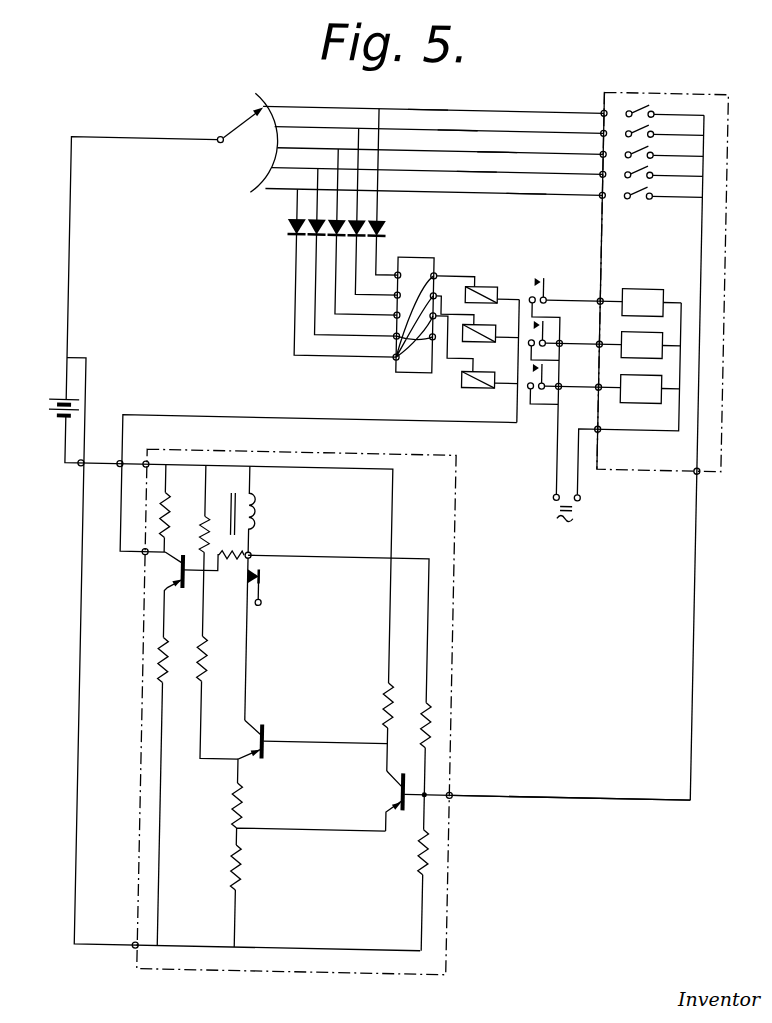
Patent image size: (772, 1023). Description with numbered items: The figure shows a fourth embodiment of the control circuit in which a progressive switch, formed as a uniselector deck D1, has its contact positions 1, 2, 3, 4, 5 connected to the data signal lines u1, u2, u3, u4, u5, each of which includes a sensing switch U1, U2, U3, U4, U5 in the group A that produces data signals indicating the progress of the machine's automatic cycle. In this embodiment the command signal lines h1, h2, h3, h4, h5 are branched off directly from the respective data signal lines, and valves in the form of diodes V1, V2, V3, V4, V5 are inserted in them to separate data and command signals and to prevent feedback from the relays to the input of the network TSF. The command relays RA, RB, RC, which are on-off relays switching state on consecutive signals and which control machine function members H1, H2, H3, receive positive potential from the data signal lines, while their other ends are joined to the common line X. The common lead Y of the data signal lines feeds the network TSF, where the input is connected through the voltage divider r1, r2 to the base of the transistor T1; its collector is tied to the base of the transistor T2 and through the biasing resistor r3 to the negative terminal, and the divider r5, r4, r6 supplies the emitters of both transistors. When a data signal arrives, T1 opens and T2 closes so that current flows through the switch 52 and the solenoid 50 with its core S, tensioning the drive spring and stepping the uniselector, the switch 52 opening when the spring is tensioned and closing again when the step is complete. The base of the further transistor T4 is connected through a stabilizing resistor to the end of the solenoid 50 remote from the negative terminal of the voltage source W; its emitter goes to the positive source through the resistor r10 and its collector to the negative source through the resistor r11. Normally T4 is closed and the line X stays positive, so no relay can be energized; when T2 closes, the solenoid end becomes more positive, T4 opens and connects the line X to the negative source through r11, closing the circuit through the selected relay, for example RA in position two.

The contact position one of deck D1 1 is at (435, 102).
The contact position two of deck D1 2 is at (441, 124).
The contact position three of deck D1 3 is at (441, 145).
The contact position four of deck D1 4 is at (439, 165).
The contact position five of deck D1 5 is at (435, 186).
The deck of uniselector D1 is at (212, 134).
The data signal line u1 is at (409, 109).
The data signal line u2 is at (448, 129).
The data signal line u3 is at (483, 150).
The data signal line u4 is at (466, 170).
The data signal line u5 is at (519, 191).
The switch unit A is at (656, 88).
The sensing switch U1 is at (665, 108).
The sensing switch U2 is at (665, 128).
The sensing switch U3 is at (664, 149).
The sensing switch U4 is at (664, 169).
The sensing switch U5 is at (663, 190).
The valve diode V1 is at (285, 236).
The valve diode V2 is at (306, 221).
The valve diode V3 is at (350, 257).
The valve diode V4 is at (354, 221).
The valve diode V5 is at (381, 234).
The command signal line h1 is at (348, 278).
The command signal line h2 is at (330, 298).
The command signal line h3 is at (318, 338).
The command signal line h4 is at (322, 345).
The command signal line h5 is at (328, 358).
The command signal control relay RA is at (488, 286).
The command signal control relay RB is at (498, 310).
The command signal control relay RC is at (476, 387).
The load H1 is at (605, 297).
The load H2 is at (604, 340).
The load H3 is at (603, 384).
The voltage source W is at (56, 416).
The common line X is at (236, 420).
The common lead of data signal lines Y is at (571, 794).
The solenoid 50 is at (255, 500).
The coil core S is at (262, 531).
The switch 52 is at (262, 592).
The TSF network TSF is at (462, 612).
The voltage divider resistor r1 is at (436, 727).
The voltage divider resistor r2 is at (425, 857).
The biasing resistor r3 is at (389, 690).
The voltage divider resistor r4 is at (247, 800).
The voltage divider resistor r5 is at (247, 870).
The voltage divider resistor r6 is at (208, 663).
The emitter resistor r10 is at (162, 660).
The collector resistor r11 is at (168, 502).
The transistor T1 is at (406, 792).
The transistor T2 is at (264, 740).
The transistor T4 is at (184, 592).